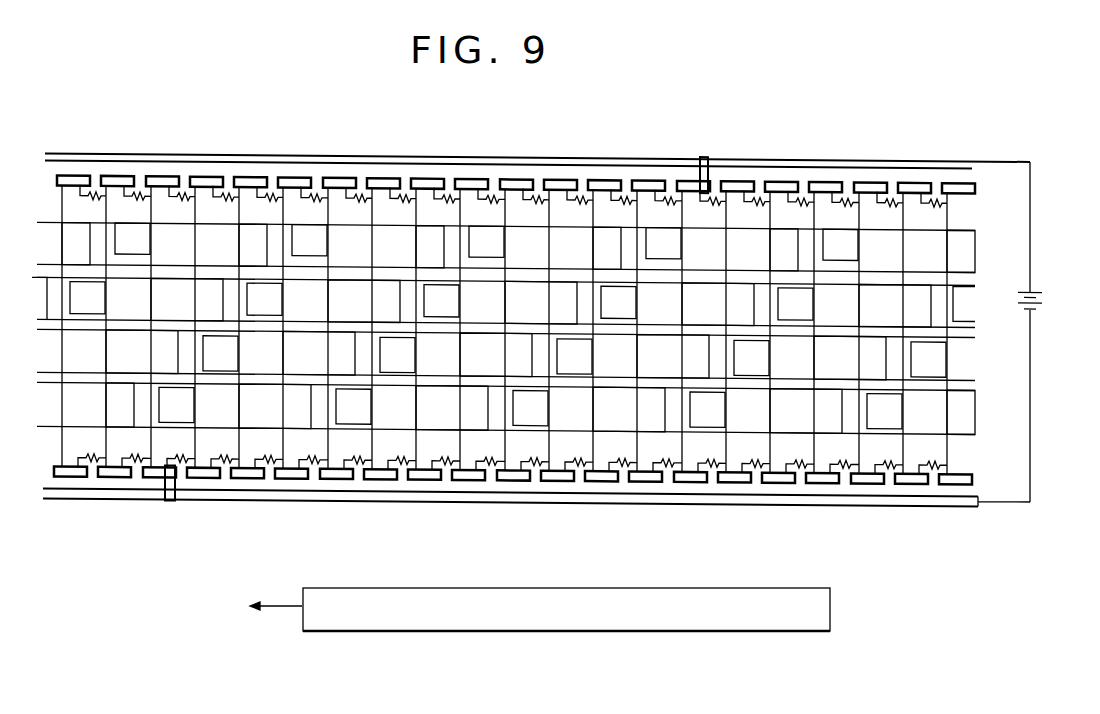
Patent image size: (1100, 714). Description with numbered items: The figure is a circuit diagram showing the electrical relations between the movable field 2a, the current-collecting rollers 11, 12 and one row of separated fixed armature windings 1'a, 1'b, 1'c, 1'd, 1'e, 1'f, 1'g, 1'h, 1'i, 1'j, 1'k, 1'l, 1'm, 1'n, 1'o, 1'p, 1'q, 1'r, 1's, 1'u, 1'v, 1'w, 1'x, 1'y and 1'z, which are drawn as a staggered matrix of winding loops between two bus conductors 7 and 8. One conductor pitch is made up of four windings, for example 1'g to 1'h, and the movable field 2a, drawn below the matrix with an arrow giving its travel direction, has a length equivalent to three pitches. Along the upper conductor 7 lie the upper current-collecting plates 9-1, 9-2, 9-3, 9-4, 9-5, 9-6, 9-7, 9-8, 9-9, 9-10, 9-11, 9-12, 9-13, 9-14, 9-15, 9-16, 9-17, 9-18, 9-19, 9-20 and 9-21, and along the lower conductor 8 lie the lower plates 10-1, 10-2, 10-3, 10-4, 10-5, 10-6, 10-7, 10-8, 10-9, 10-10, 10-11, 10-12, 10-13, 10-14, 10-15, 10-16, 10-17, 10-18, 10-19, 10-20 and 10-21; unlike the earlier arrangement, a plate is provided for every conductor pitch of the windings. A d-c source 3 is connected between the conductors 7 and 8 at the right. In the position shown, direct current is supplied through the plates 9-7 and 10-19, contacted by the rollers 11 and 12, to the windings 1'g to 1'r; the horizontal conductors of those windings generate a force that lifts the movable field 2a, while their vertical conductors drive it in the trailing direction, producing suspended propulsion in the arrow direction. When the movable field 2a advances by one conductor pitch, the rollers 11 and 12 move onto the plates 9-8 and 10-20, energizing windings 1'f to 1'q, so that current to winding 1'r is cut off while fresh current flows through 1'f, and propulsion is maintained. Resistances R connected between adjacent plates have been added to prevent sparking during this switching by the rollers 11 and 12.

The conductor 7 is at (972, 153).
The conductor 8 is at (975, 491).
The power source 3 is at (1042, 290).
The current-collecting roller 11 is at (708, 158).
The current-collecting roller 12 is at (166, 499).
The movable field 2a is at (664, 632).
The resistance R is at (222, 455).
The current-collecting plate 9-1 is at (959, 175).
The current-collecting plate 9-2 is at (915, 175).
The current-collecting plate 9-3 is at (871, 175).
The current-collecting plate 9-4 is at (826, 175).
The current-collecting plate 9-5 is at (782, 175).
The current-collecting plate 9-6 is at (738, 175).
The current-collecting plate 9-7 is at (694, 175).
The current-collecting plate 9-8 is at (649, 175).
The current-collecting plate 9-9 is at (605, 175).
The current-collecting plate 9-10 is at (561, 175).
The current-collecting plate 9-11 is at (517, 175).
The current-collecting plate 9-12 is at (472, 175).
The current-collecting plate 9-13 is at (428, 175).
The current-collecting plate 9-14 is at (384, 175).
The current-collecting plate 9-15 is at (340, 175).
The current-collecting plate 9-16 is at (295, 175).
The current-collecting plate 9-17 is at (251, 175).
The current-collecting plate 9-18 is at (205, 175).
The current-collecting plate 9-19 is at (163, 175).
The current-collecting plate 9-20 is at (116, 175).
The current-collecting plate 9-21 is at (74, 175).
The current-collecting plate 10-1 is at (963, 476).
The current-collecting plate 10-2 is at (917, 476).
The current-collecting plate 10-3 is at (875, 476).
The current-collecting plate 10-4 is at (828, 476).
The current-collecting plate 10-5 is at (786, 476).
The current-collecting plate 10-6 is at (740, 476).
The current-collecting plate 10-7 is at (698, 476).
The current-collecting plate 10-8 is at (651, 476).
The current-collecting plate 10-9 is at (609, 476).
The current-collecting plate 10-10 is at (563, 476).
The current-collecting plate 10-11 is at (521, 476).
The current-collecting plate 10-12 is at (474, 476).
The current-collecting plate 10-13 is at (432, 476).
The current-collecting plate 10-14 is at (386, 476).
The current-collecting plate 10-15 is at (344, 476).
The current-collecting plate 10-16 is at (297, 476).
The current-collecting plate 10-17 is at (255, 476).
The current-collecting plate 10-18 is at (209, 476).
The current-collecting plate 10-19 is at (167, 476).
The current-collecting plate 10-20 is at (120, 476).
The current-collecting plate 10-21 is at (78, 476).
The fixed armature winding 1'a is at (29, 298).
The fixed armature winding 1'b is at (59, 243).
The fixed armature winding 1'c is at (100, 405).
The fixed armature winding 1'd is at (122, 352).
The fixed armature winding 1'e is at (108, 300).
The fixed armature winding 1'f is at (150, 244).
The fixed armature winding 1'g is at (196, 406).
The fixed armature winding 1'h is at (241, 354).
The fixed armature winding 1'i is at (281, 300).
The fixed armature winding 1'j is at (327, 245).
The fixed armature winding 1'k is at (373, 407).
The fixed armature winding 1'l is at (413, 355).
The fixed armature winding 1'm is at (465, 301).
The fixed armature winding 1'n is at (509, 245).
The fixed armature winding 1'o is at (550, 408).
The fixed armature winding 1'p is at (594, 357).
The fixed armature winding 1'q is at (637, 302).
The fixed armature winding 1'r is at (683, 246).
The fixed armature winding 1's is at (726, 410).
The fixed armature winding 1'u is at (771, 358).
The fixed armature winding 1'v is at (815, 304).
The fixed armature winding 1'w is at (861, 246).
The fixed armature winding 1'x is at (904, 412).
The fixed armature winding 1'y is at (948, 360).
The fixed armature winding 1'z is at (971, 303).